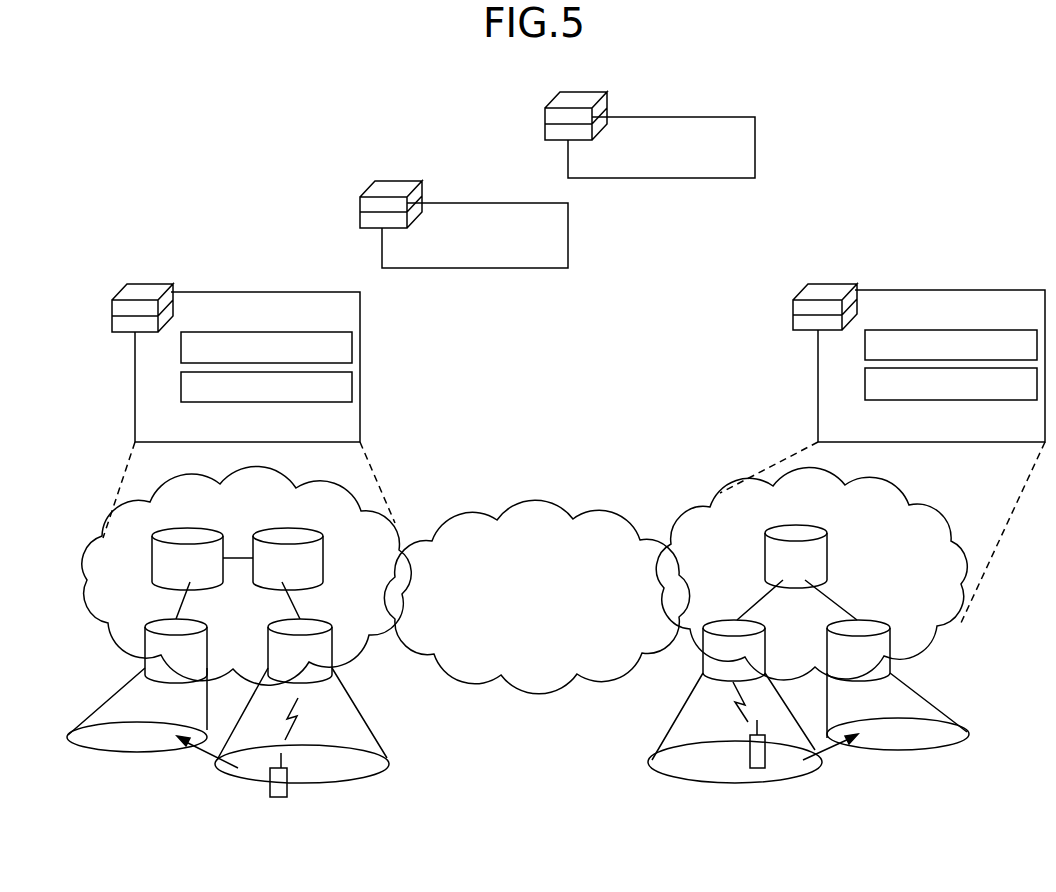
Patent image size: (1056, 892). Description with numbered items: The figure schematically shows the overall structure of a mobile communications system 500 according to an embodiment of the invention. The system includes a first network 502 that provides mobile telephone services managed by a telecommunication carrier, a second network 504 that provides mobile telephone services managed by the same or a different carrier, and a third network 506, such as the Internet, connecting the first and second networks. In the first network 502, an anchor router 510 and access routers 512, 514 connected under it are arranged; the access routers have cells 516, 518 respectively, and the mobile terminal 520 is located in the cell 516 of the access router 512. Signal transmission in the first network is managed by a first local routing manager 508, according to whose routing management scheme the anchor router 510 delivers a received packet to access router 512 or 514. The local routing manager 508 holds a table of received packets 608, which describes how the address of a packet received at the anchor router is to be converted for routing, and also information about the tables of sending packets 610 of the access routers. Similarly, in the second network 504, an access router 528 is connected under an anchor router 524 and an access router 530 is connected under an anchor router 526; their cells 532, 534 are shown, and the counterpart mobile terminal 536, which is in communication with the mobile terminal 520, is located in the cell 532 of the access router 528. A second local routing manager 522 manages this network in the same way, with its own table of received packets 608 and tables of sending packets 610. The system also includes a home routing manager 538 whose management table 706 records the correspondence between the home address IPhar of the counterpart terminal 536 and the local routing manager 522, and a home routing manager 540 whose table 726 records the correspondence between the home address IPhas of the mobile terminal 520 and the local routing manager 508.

The mobile communications system 500 is at (128, 121).
The first network 502 is at (945, 538).
The second network 504 is at (278, 487).
The third network 506 is at (500, 517).
The first local routing manager (LRMs) 508 is at (793, 307).
The anchor router (ANRs) 510 is at (827, 548).
The access router (oARs) 512 is at (765, 643).
The access router (nARs) 514 is at (890, 643).
The cell 516 is at (720, 783).
The cell 518 is at (907, 750).
The mobile terminal 520 is at (748, 755).
The second local routing manager (LRMr) 522 is at (112, 307).
The anchor router (oANRr) 524 is at (323, 545).
The anchor router (nANRr) 526 is at (152, 556).
The access router (oARr) 528 is at (332, 642).
The access router (nARr) 530 is at (207, 642).
The cell 532 is at (365, 780).
The cell 534 is at (132, 752).
The counterpart mobile terminal 536 is at (287, 790).
The home routing manager (HRMr) 538 is at (360, 205).
The home routing manager (HRMs) 540 is at (545, 115).
The table of received packets (TRP) 608 is at (196, 332).
The table of sending packets (TSP) 610 is at (199, 402).
The management table 706 is at (449, 203).
The HRMs table 726 is at (712, 117).